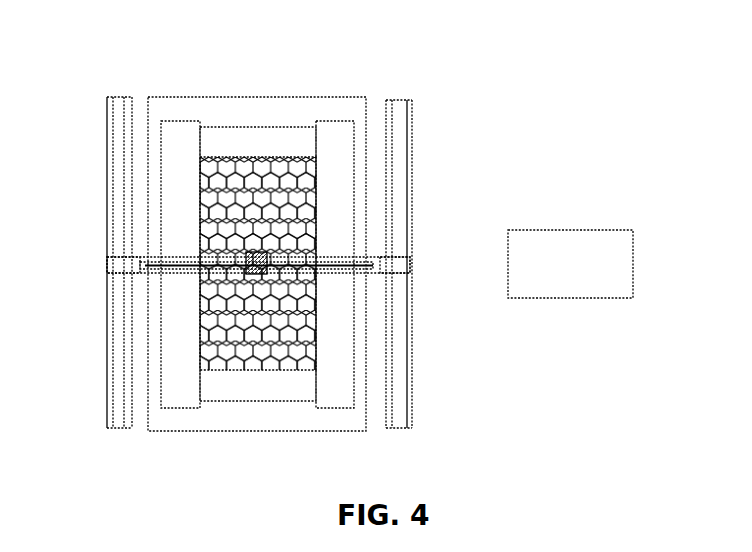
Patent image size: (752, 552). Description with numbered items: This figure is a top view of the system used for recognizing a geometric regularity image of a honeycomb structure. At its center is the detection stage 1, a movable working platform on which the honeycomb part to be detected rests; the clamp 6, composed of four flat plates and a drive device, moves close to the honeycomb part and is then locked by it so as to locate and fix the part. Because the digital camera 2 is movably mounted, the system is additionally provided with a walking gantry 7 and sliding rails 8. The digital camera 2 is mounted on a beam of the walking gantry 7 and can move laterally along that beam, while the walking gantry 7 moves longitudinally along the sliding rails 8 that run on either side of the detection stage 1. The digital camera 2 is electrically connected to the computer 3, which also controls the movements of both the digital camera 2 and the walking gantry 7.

The detection stage 1 is at (223, 108).
The digital camera 2 is at (250, 256).
The computer 3 is at (622, 253).
The clamp 6 is at (266, 150).
The walking gantry 7 is at (383, 266).
The sliding rails 8 is at (400, 187).